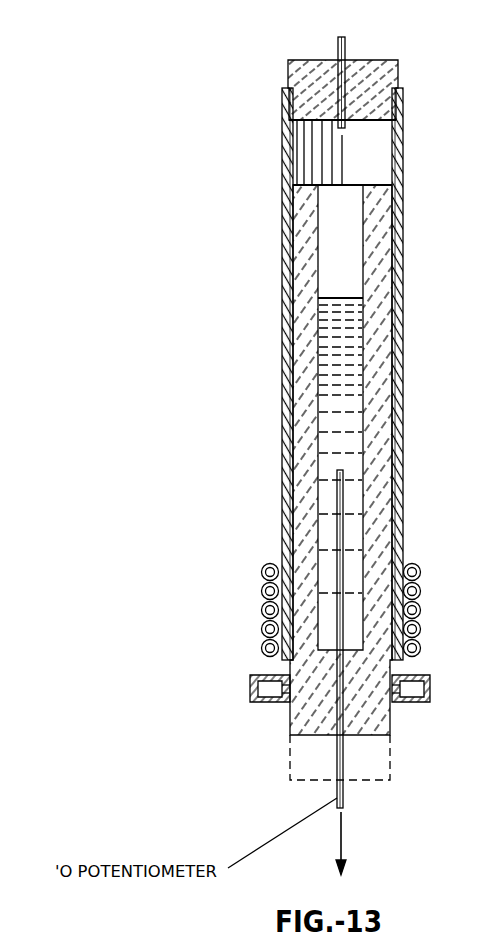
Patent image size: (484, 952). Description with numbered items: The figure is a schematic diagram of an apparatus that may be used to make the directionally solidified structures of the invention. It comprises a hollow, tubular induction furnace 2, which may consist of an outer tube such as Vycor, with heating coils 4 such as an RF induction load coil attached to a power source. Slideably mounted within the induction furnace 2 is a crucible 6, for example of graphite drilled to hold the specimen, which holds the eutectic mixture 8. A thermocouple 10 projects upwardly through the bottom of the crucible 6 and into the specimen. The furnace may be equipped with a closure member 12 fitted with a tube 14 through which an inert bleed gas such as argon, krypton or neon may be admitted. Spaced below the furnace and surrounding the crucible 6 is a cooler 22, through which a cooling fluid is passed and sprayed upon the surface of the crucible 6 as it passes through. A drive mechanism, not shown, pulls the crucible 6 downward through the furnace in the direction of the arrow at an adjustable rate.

The induction furnace 2 is at (282, 290).
The heating coils 4 is at (261, 592).
The crucible 6 is at (393, 190).
The eutectic mixture 8 is at (360, 347).
The thermocouple 10 is at (345, 789).
The closure member 12 is at (398, 74).
The tube 14 is at (346, 48).
The cooler 22 is at (250, 688).